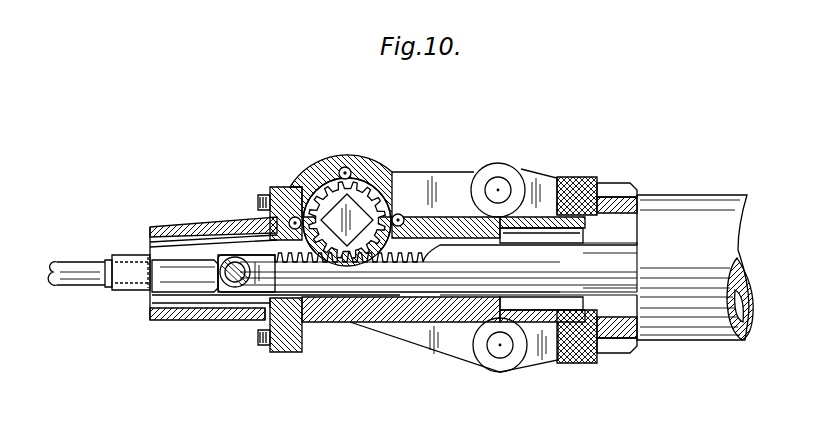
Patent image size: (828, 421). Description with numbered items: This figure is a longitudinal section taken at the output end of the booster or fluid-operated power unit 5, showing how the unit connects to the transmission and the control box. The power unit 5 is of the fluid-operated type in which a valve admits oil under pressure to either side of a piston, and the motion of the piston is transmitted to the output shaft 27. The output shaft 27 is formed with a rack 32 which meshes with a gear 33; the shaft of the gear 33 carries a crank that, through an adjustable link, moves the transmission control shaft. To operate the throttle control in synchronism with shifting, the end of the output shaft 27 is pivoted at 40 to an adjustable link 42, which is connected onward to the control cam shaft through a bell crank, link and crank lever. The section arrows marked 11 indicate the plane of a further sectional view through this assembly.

The power unit 5 is at (672, 330).
The section line 11- 11 is at (345, 108).
The output shaft 27 is at (576, 277).
The rack 32 is at (325, 268).
The gear 33 is at (372, 184).
The pivot 40 is at (232, 284).
The adjustable link 42 is at (90, 281).